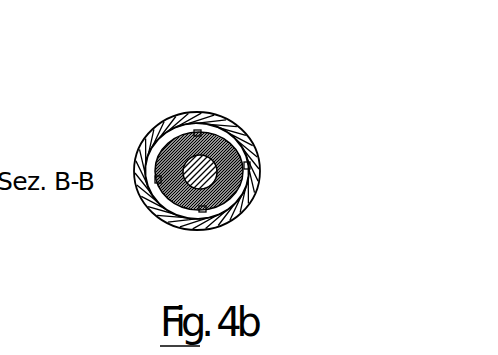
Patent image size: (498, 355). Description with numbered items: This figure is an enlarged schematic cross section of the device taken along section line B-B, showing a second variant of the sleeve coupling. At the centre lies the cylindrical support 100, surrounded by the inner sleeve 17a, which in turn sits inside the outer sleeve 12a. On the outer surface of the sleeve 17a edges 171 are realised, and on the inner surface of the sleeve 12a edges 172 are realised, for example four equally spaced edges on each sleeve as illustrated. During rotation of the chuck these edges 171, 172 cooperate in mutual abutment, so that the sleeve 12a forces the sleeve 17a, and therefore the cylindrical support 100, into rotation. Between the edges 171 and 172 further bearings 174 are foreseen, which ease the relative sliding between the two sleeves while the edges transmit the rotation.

The cylindrical support 100 is at (162, 220).
The sleeve 12a is at (257, 147).
The edges 171 is at (182, 137).
The edges 172 is at (220, 117).
The bearings 174 is at (192, 127).
The sleeve 17a is at (225, 183).